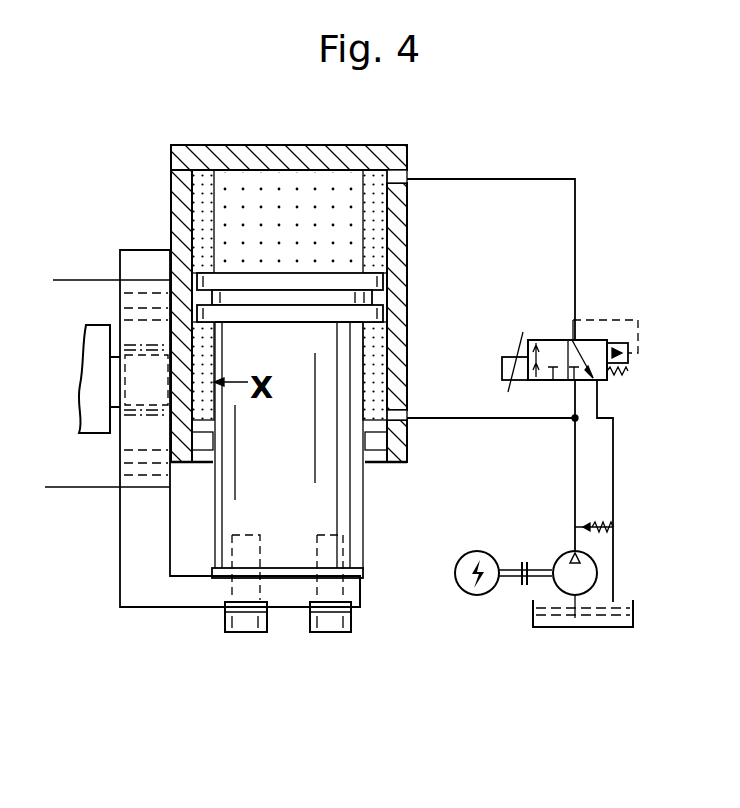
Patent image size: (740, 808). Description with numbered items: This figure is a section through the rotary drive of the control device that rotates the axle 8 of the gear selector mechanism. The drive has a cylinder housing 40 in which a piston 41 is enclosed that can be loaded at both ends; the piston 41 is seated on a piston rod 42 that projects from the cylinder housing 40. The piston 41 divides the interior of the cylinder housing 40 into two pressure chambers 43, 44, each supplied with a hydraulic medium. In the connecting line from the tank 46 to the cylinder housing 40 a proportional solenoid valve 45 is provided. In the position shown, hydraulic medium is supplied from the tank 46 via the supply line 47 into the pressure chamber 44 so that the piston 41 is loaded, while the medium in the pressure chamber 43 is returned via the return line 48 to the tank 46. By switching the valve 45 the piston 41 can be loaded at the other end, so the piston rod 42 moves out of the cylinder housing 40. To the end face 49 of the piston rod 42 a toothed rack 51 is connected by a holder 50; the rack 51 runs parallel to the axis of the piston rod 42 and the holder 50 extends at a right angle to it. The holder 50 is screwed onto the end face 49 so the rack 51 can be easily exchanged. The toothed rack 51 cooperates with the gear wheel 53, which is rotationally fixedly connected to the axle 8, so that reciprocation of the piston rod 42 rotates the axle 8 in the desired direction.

The axle 8 is at (117, 390).
The cylinder housing 40 is at (182, 190).
The piston 41 is at (325, 297).
The piston rod 42 is at (328, 475).
The pressure chamber 43 is at (243, 193).
The pressure chamber 44 is at (370, 353).
The proportional solenoid valve 45 is at (545, 326).
The tank 46 is at (553, 613).
The supply line 47 is at (488, 418).
The return line 48 is at (518, 179).
The end face 49 is at (283, 570).
The holder 50 is at (190, 593).
The toothed rack 51 is at (133, 545).
The gear wheel 53 is at (150, 370).